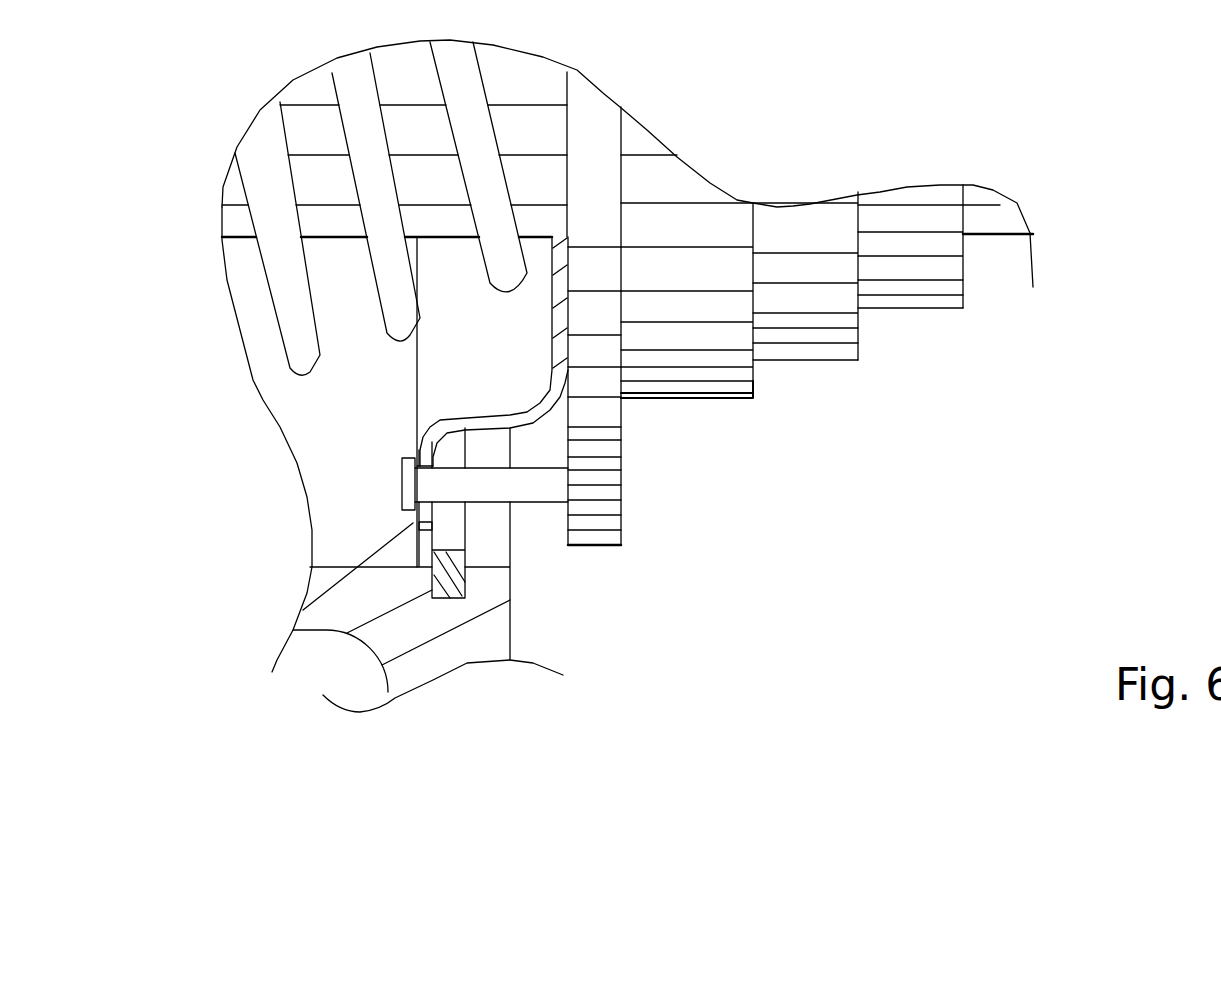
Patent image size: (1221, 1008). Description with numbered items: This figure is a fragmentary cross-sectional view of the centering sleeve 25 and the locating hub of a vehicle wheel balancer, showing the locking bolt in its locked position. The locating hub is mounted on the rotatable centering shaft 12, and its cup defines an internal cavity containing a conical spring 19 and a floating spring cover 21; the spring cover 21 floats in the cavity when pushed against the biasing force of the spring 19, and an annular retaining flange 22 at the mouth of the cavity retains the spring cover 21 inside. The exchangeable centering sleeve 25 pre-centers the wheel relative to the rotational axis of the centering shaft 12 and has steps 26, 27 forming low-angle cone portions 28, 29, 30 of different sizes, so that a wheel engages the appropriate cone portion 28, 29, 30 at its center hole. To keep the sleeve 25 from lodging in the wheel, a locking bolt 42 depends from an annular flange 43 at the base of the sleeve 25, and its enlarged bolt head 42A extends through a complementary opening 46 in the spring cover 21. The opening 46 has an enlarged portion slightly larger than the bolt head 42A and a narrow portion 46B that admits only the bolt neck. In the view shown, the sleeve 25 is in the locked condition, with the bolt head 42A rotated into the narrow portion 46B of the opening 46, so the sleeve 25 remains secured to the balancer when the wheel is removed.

The centering shaft 12 is at (1000, 237).
The conical spring 19 is at (290, 314).
The spring cover 21 is at (460, 420).
The retaining flange 22 is at (445, 598).
The centering sleeve 25 is at (813, 217).
The step 26 is at (858, 333).
The step 27 is at (755, 387).
The cone portion 28 is at (947, 310).
The cone portion 29 is at (840, 365).
The cone portion 30 is at (682, 400).
The locking bolt 42 is at (489, 485).
The bolt head 42A is at (402, 498).
The annular flange 43 is at (622, 513).
The opening 46 is at (413, 522).
The narrow portion 46B is at (428, 465).